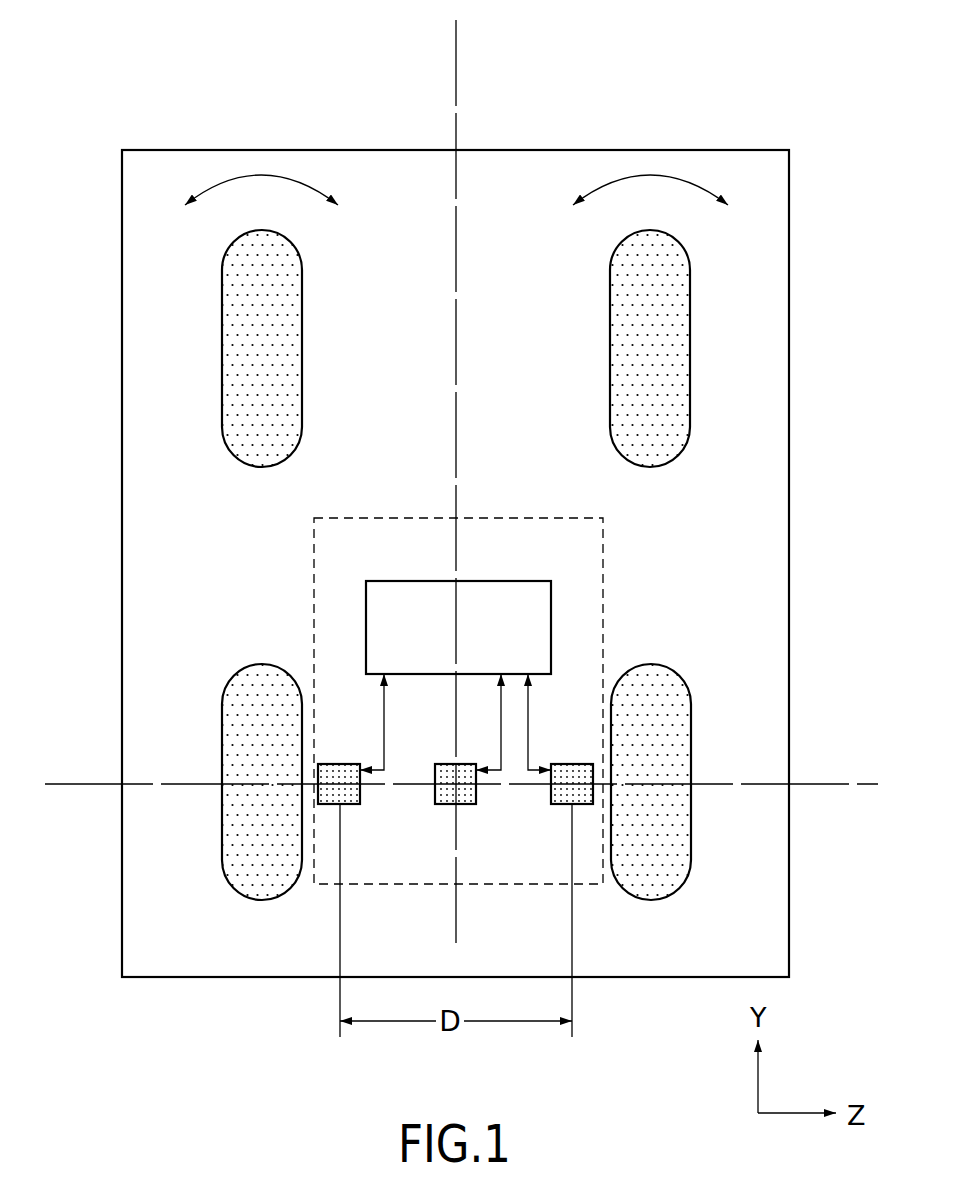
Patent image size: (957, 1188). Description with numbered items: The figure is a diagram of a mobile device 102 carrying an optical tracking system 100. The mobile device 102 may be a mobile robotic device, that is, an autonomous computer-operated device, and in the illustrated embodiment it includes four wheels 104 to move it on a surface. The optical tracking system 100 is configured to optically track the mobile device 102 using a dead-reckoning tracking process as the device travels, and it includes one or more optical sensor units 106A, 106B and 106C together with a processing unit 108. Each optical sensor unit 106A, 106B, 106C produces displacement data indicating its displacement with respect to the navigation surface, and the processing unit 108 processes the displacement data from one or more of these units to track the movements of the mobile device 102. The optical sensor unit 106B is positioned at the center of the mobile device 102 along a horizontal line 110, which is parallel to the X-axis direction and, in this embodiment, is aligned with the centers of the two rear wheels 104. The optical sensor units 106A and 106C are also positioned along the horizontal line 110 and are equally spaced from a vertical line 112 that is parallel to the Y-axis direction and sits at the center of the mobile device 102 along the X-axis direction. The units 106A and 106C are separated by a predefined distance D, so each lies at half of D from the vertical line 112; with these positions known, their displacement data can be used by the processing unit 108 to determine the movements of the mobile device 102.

The optical tracking system 100 is at (603, 592).
The mobile device 102 is at (710, 150).
The wheels 104 is at (302, 332).
The optical sensor unit 106A is at (353, 804).
The optical sensor unit 106B is at (466, 804).
The optical sensor unit 106C is at (562, 804).
The processing unit 108 is at (493, 581).
The horizontal line 110 is at (847, 784).
The vertical line 112 is at (457, 70).